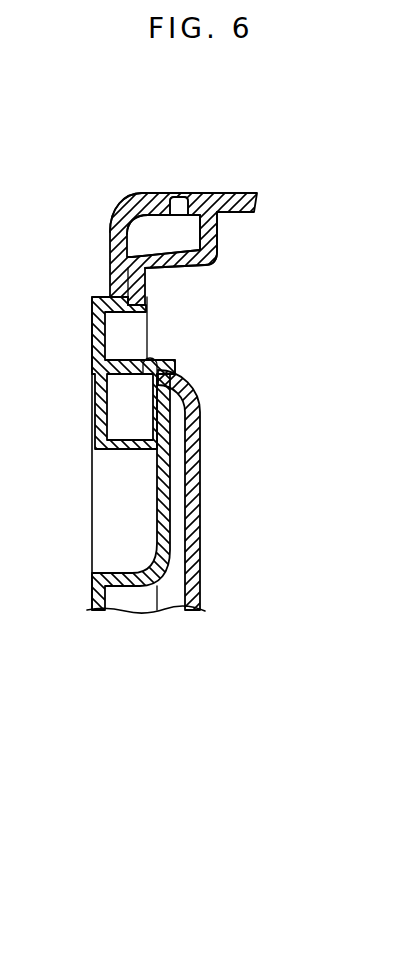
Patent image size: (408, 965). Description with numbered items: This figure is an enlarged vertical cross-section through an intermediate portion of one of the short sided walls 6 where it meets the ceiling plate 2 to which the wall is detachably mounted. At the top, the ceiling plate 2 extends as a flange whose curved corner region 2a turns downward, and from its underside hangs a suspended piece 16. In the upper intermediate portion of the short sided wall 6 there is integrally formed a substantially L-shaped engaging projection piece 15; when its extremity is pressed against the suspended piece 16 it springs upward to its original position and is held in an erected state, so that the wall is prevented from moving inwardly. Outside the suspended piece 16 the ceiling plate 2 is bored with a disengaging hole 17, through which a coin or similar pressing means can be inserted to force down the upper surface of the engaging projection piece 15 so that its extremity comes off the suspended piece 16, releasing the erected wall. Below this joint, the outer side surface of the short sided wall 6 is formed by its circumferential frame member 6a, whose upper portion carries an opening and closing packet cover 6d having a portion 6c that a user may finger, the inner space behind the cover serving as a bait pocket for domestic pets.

The ceiling plate 2 is at (166, 231).
The curved top wall of hub cap 2a is at (115, 224).
The short sided wall 6 is at (97, 436).
The circumferential frame member 6a is at (95, 342).
The finger portion 6c is at (98, 483).
The opening and closing packet cover 6d is at (100, 592).
The engaging projection piece 15 is at (196, 268).
The suspended piece 16 is at (215, 238).
The disengaging hole 17 is at (178, 197).